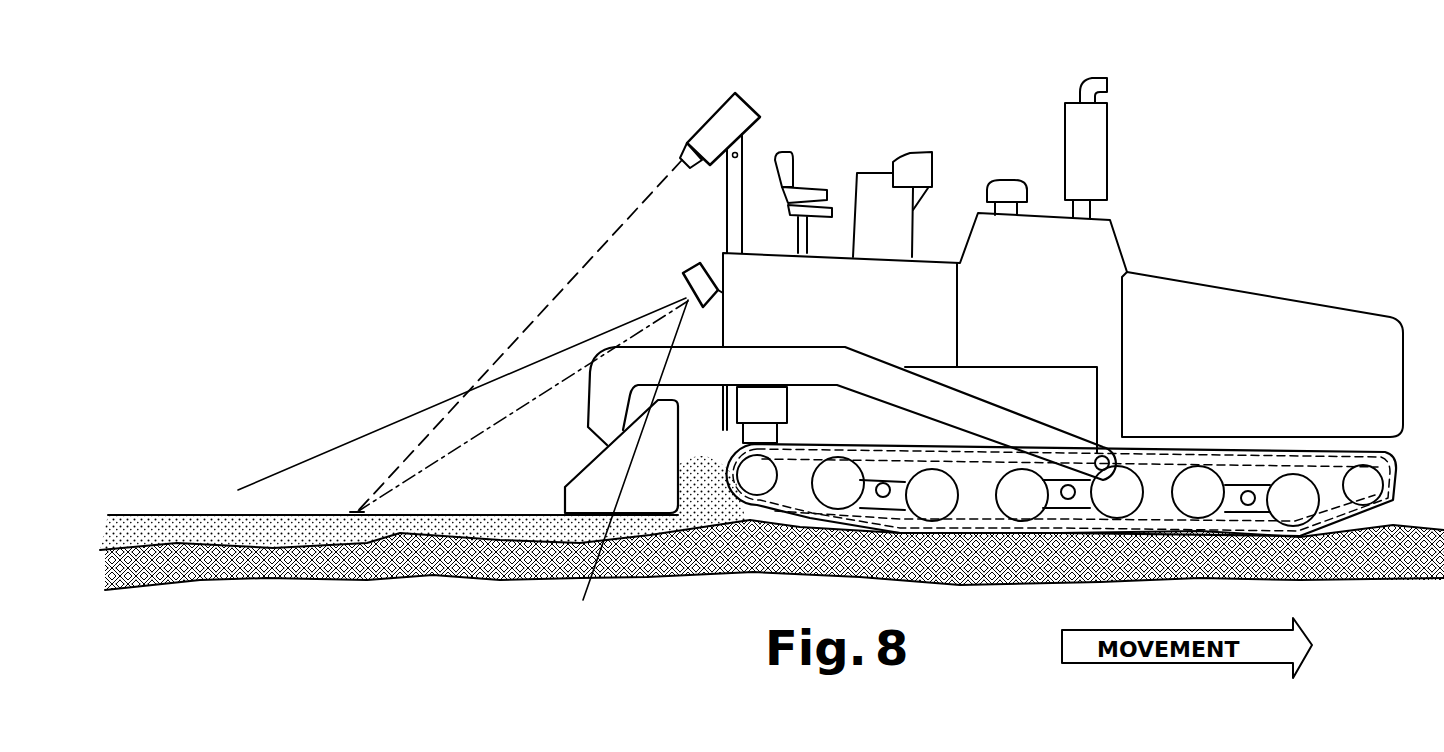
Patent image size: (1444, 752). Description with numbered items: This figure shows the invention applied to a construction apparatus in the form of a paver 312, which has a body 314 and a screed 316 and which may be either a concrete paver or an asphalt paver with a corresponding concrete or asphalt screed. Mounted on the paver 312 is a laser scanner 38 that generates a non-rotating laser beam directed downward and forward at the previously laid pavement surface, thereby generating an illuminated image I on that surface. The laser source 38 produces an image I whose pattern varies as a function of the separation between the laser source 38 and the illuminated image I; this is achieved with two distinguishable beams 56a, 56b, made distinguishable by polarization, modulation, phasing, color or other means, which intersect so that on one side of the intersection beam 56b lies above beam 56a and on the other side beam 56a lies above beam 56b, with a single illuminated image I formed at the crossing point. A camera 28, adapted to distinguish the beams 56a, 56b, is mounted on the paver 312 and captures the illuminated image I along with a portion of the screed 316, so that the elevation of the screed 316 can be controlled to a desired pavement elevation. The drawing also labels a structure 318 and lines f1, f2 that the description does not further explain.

The paver 312 is at (1140, 235).
The body 314 is at (1292, 300).
The screed 316 is at (575, 478).
The screed arm 318 is at (795, 347).
The laser scanner 38 is at (757, 108).
The camera 28 is at (682, 268).
The beam 56a is at (600, 247).
The beam 56b is at (522, 406).
The first focal line f1 is at (588, 338).
The second focal line f2 is at (587, 588).
The illuminated image I is at (355, 513).